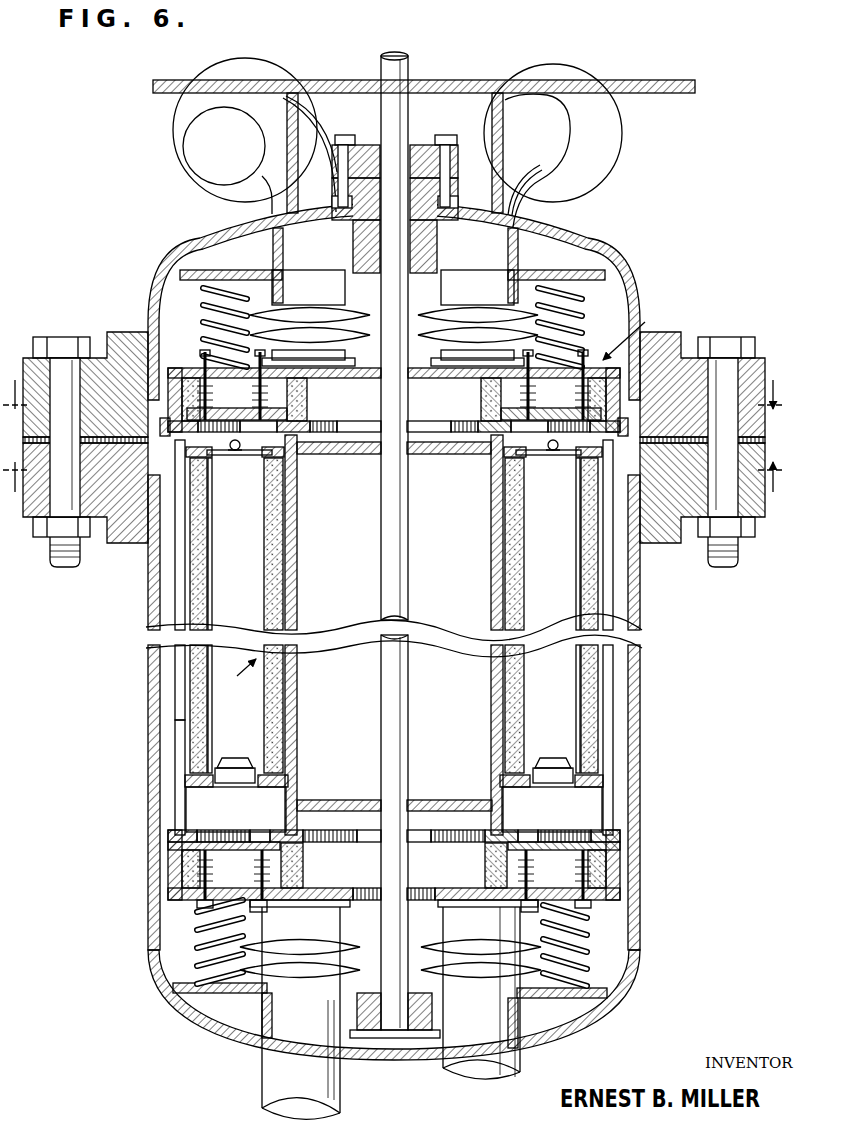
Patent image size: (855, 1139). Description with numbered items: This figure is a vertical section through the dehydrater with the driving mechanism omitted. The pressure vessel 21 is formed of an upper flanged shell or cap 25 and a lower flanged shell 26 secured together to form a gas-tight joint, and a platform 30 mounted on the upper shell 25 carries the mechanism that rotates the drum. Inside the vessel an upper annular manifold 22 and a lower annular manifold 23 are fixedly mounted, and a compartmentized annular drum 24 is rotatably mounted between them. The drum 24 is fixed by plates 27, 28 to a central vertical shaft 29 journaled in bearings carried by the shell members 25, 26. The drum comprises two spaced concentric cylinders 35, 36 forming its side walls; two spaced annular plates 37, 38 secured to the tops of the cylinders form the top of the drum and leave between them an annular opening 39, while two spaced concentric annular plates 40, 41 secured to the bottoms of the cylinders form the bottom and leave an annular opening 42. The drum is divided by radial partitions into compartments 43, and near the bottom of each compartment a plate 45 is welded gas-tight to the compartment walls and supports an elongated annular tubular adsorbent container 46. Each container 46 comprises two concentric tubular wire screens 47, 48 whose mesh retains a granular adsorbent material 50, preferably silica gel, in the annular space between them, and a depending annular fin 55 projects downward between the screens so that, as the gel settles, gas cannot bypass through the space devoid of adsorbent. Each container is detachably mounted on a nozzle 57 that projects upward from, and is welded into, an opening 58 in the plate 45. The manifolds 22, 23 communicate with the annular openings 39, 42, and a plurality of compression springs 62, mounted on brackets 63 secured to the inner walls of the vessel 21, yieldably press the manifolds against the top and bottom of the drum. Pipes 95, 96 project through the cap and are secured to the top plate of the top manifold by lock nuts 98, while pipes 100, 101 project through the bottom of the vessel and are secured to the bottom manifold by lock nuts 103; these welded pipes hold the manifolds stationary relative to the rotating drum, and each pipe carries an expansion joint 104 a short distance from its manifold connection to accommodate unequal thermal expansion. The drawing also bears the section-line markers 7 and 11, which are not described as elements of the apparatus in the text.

The platform 30 is at (652, 94).
The pipe 95 is at (268, 157).
The pipe 96 is at (556, 166).
The bracket 63 is at (200, 272).
The upper flanged shell or cap 25 is at (152, 302).
The compression spring 62 is at (208, 330).
The upper annular manifold 22 is at (637, 331).
The expansion joint 104 is at (355, 313).
The lock nut 98 is at (443, 363).
The annular plate 38 is at (318, 425).
The annular plate 37 is at (172, 430).
The annular opening 39 is at (229, 449).
The depending annular fin 55 is at (266, 500).
The plate 27 is at (440, 454).
The central vertical shaft 29 is at (409, 552).
The cylinder 35 is at (176, 575).
The granular adsorbent material 50 is at (213, 598).
The cylinder 36 is at (289, 595).
The section line 11 is at (406, 383).
The section line 7 is at (400, 497).
The annular drum 24 is at (172, 682).
The adsorbent container 46 is at (239, 678).
The tubular wire screen 47 is at (206, 718).
The tubular wire screen 48 is at (206, 746).
The pressure vessel 21 is at (146, 737).
The lower flanged shell 26 is at (174, 781).
The compartment 43 is at (195, 803).
The annular opening 42 is at (236, 809).
The annular plate 40 is at (190, 837).
The annular plate 41 is at (280, 833).
The plate 45 is at (282, 792).
The plate 28 is at (444, 810).
The nozzle 57 is at (555, 783).
The opening 58 is at (583, 786).
The lower annular manifold 23 is at (176, 910).
The lock nut 103 is at (352, 905).
The pipe 100 is at (282, 1077).
The pipe 101 is at (520, 1058).